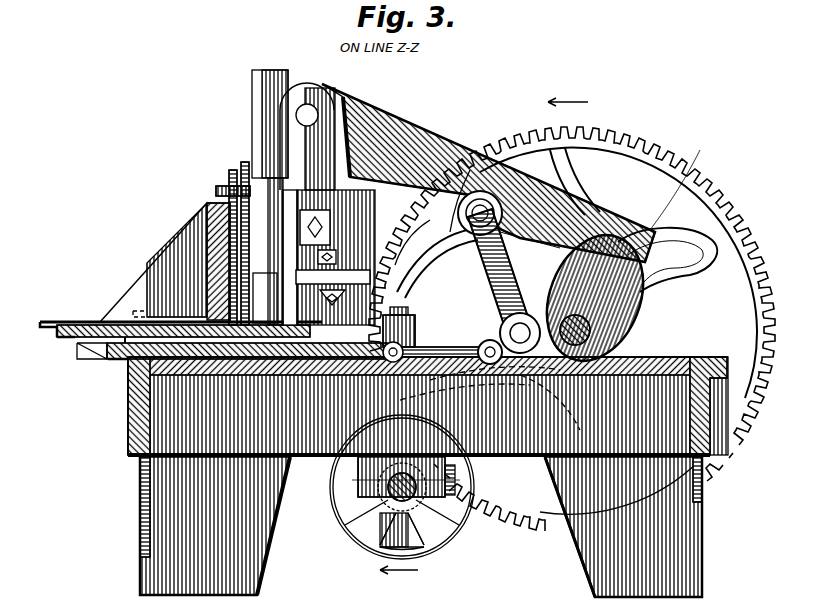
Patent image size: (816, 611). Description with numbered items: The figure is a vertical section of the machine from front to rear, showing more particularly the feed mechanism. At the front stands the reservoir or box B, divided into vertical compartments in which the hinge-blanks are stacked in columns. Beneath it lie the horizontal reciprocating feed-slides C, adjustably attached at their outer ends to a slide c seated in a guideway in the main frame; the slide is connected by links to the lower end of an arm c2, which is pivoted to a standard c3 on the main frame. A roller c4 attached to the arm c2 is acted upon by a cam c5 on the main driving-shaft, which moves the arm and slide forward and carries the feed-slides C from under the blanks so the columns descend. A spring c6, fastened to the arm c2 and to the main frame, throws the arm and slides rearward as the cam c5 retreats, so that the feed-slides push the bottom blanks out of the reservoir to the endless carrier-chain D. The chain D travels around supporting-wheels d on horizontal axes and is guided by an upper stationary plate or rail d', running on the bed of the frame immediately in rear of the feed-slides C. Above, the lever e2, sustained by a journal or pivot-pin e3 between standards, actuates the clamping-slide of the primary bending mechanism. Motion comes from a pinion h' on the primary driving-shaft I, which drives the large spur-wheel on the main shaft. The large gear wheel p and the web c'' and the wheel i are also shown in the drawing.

The main gear wheel p is at (714, 170).
The lever e2 is at (482, 158).
The journal or pivot-pin e3 is at (307, 117).
The arm c2 is at (556, 290).
The standard c3 is at (500, 328).
The roller c4 is at (527, 360).
The cam c5 is at (640, 250).
The spring c6 is at (410, 222).
The supporting-wheels d is at (428, 300).
The upper stationary plate or rail d' is at (219, 185).
The endless carrier-chain D is at (237, 162).
The reservoir or box B is at (165, 262).
The feed-slides C is at (72, 321).
The slide c is at (215, 364).
The bracket web c'' is at (177, 260).
The wheel i is at (449, 536).
The pinion h' is at (406, 496).
The primary driving-shaft I is at (388, 508).